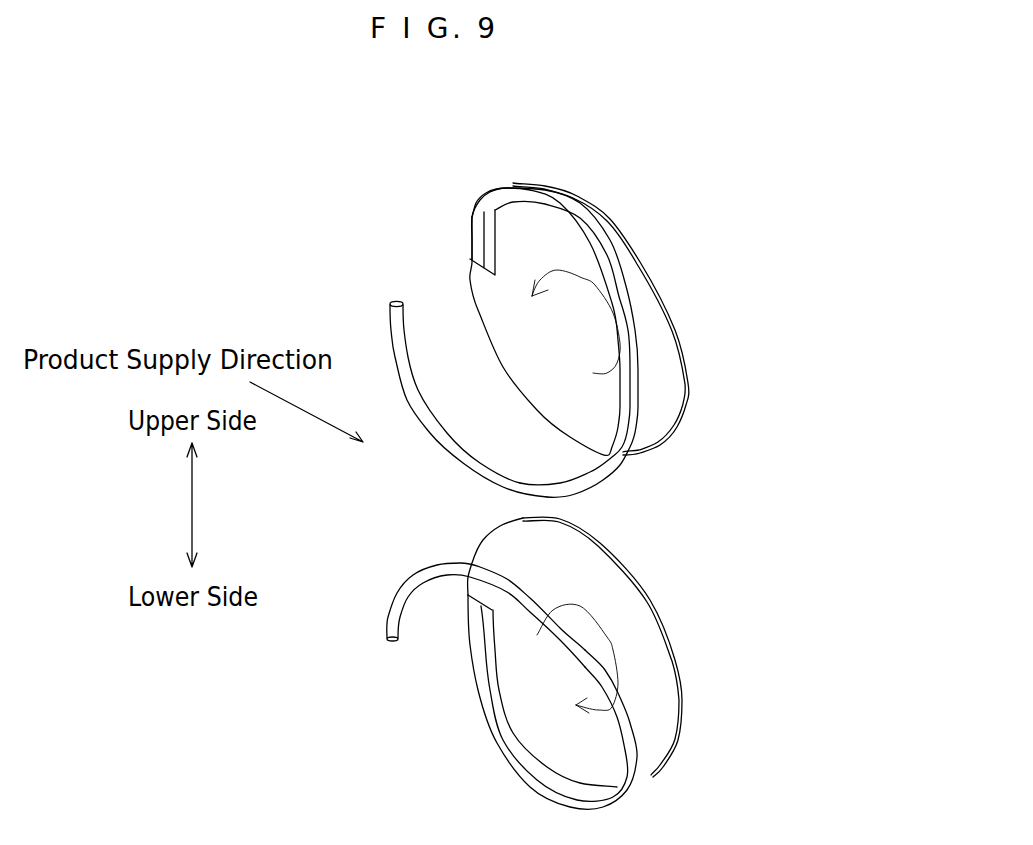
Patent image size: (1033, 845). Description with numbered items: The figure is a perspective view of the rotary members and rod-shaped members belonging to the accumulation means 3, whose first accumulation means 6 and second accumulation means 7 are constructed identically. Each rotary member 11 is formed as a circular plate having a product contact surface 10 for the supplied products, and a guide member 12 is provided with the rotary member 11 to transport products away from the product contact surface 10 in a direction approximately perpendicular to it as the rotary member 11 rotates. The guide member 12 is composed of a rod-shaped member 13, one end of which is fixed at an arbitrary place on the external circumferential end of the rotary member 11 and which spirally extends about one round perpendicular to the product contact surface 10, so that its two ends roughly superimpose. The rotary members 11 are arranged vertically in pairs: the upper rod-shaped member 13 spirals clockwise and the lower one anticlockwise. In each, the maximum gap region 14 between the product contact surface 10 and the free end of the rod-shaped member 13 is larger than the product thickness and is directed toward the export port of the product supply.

The accumulation means 3 is at (568, 478).
The first accumulation means 6 is at (568, 478).
The second accumulation means 7 is at (709, 243).
The product contact surface 10 is at (613, 252).
The rotary member 11 is at (658, 340).
The guide member 12 is at (462, 498).
The rod-shaped member 13 is at (462, 498).
The maximum gap region 14 is at (438, 322).